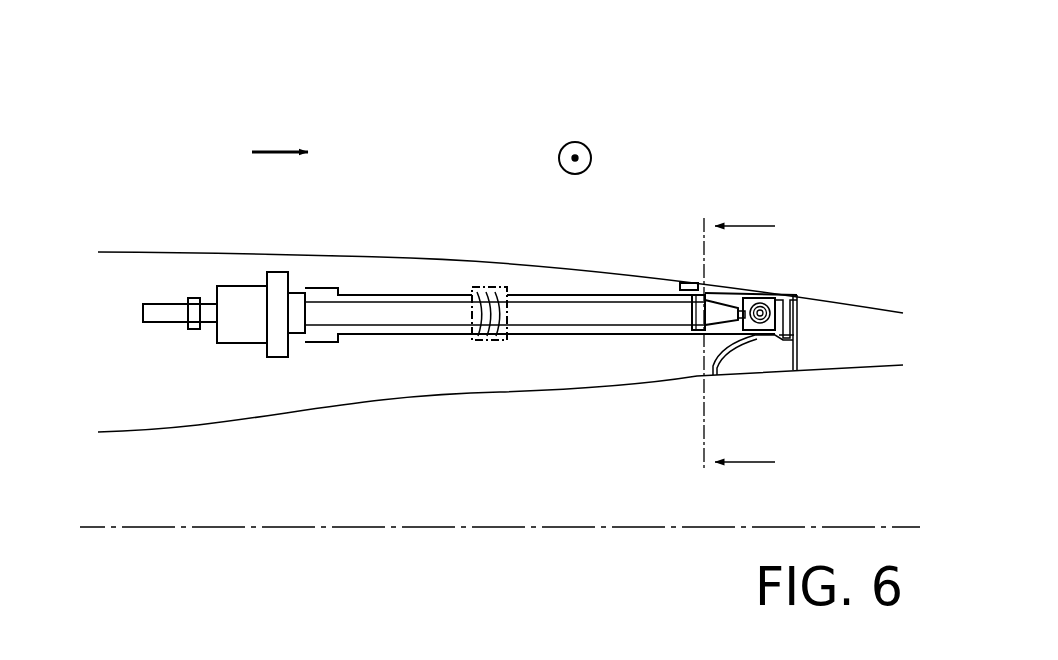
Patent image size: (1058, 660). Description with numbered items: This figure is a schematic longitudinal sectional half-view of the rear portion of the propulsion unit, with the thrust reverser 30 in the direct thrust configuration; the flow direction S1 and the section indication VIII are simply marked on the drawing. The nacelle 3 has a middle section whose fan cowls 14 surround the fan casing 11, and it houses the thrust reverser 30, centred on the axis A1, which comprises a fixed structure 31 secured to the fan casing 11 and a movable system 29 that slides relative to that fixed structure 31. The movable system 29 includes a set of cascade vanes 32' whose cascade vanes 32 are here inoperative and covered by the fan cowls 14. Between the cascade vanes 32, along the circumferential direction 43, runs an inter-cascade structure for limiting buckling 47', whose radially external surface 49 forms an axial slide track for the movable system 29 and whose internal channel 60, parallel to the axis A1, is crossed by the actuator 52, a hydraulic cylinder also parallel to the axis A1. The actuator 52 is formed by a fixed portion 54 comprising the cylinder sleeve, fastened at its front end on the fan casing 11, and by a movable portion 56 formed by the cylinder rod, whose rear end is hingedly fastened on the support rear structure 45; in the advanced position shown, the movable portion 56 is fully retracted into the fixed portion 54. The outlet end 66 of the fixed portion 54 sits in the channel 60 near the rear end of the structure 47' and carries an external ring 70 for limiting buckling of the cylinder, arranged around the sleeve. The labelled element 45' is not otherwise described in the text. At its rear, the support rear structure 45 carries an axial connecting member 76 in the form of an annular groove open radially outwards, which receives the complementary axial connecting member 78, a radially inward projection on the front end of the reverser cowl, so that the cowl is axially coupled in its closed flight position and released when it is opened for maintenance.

The nacelle 3 is at (122, 238).
The fan cowls 14 is at (428, 250).
The fan casing 11 is at (200, 272).
The fixed structure 31 is at (687, 384).
The flow direction S1 is at (283, 148).
The axis A1 is at (418, 527).
The section view indicator VIII is at (775, 222).
The circumferential direction 43 is at (574, 157).
The set of cascade vanes 32' is at (206, 325).
The stepped housing 45' is at (339, 269).
The actuator 52 is at (353, 307).
The inter-cascade structure for limiting buckling 47' is at (521, 251).
The radially external surface 49 is at (588, 294).
The fixed portion 54 is at (386, 314).
The internal channel 60 is at (375, 335).
The movable system 29 is at (552, 343).
The cascade vanes 32 is at (515, 281).
The thrust reverser 30 is at (674, 272).
The external ring for limiting buckling 70 is at (691, 327).
The outlet end 66 is at (722, 308).
The movable portion 56 is at (748, 299).
The complementary axial connecting member 78 is at (798, 300).
The axial connecting member 76 is at (797, 333).
The support rear structure 45 is at (764, 392).